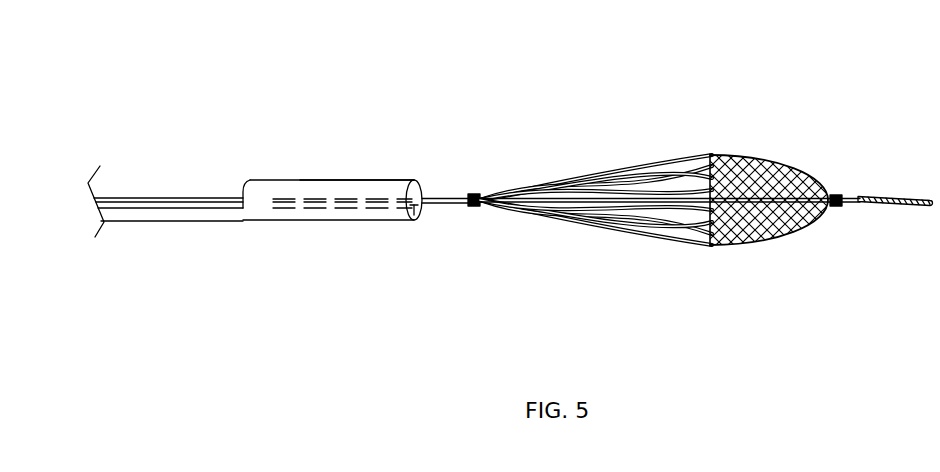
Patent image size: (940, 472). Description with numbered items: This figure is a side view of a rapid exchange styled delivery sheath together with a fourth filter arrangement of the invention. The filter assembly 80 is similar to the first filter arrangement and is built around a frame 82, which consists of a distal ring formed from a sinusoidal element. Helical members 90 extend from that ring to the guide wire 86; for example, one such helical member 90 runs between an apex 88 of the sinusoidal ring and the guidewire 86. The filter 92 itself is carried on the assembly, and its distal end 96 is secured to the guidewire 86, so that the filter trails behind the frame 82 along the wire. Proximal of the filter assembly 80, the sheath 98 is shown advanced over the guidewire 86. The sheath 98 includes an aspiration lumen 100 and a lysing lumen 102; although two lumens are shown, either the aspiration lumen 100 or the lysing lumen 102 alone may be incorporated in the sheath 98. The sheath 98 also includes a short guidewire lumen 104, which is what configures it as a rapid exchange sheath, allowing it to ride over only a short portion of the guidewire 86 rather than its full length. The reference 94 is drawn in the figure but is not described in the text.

The filter assembly 80 is at (697, 177).
The frame 82 is at (596, 173).
The guide wire 86 is at (848, 192).
The apex 88 is at (711, 229).
The helical members 90 is at (670, 226).
The filter 92 is at (766, 234).
The proximal collar 94 is at (474, 208).
The distal end 96 is at (837, 207).
The sheath 98 is at (373, 180).
The aspiration lumen 100 is at (325, 212).
The lysing lumen 102 is at (420, 213).
The guidewire lumen 104 is at (278, 192).